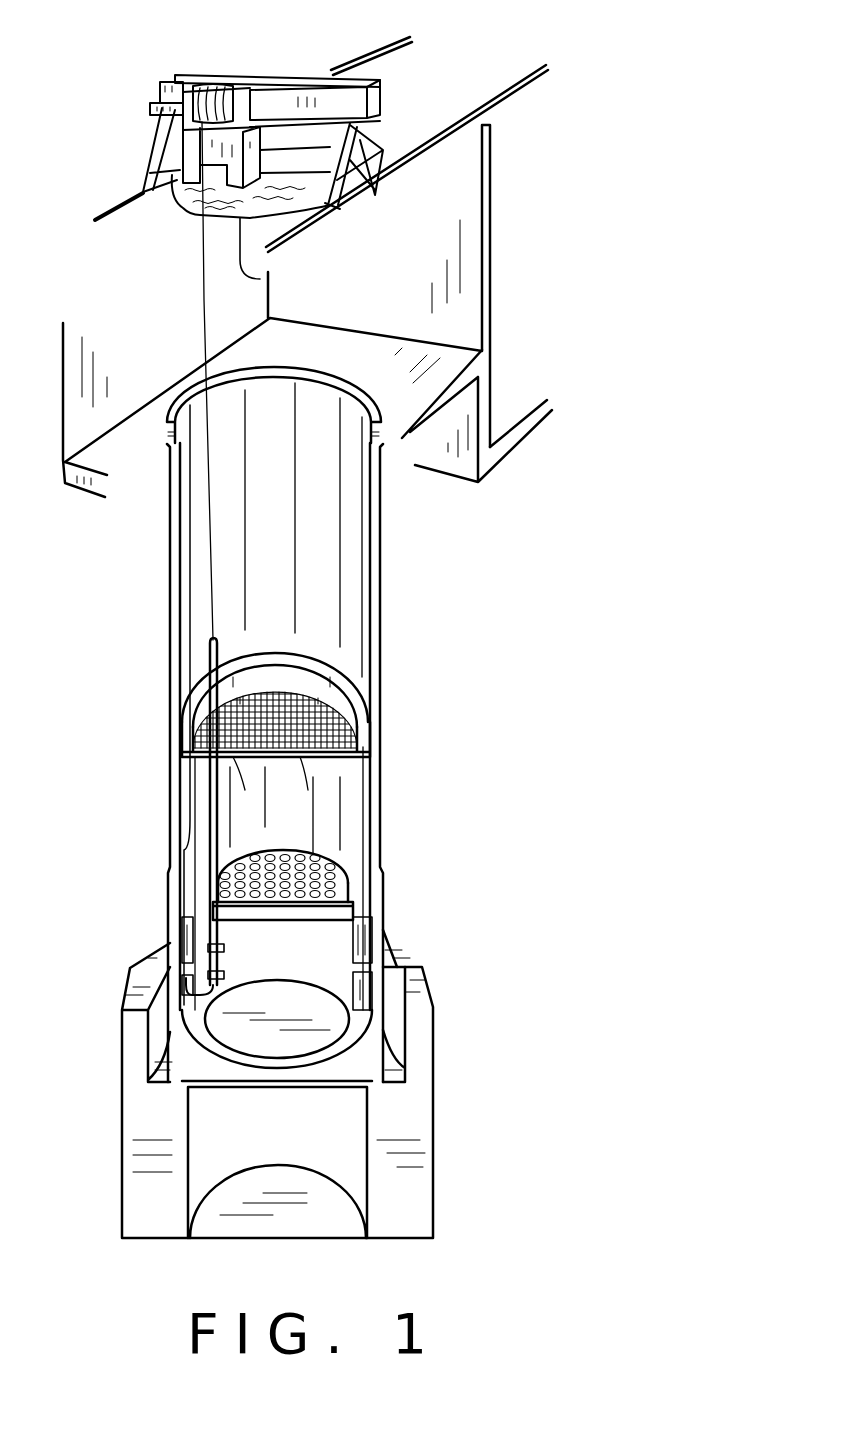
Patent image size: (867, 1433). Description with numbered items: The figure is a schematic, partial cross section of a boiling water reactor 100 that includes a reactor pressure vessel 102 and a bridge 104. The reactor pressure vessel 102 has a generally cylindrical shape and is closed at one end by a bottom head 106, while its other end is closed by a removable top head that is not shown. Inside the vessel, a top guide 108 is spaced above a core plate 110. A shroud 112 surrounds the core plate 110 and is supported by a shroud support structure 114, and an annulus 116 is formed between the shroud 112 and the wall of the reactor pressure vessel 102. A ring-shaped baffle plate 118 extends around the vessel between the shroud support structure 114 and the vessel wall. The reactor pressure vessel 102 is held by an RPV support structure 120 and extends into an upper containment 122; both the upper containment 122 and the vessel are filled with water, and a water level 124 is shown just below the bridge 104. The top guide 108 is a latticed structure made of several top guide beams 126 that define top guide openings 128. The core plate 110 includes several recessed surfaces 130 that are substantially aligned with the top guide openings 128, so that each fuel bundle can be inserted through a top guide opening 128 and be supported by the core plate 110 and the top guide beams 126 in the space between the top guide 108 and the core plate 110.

The boiling water reactor 100 is at (516, 322).
The reactor pressure vessel 102 is at (380, 547).
The bridge 104 is at (303, 54).
The bottom head 106 is at (380, 1067).
The top guide 108 is at (300, 730).
The core plate 110 is at (318, 865).
The shroud 112 is at (193, 783).
The shroud support structure 114 is at (190, 958).
The annulus 116 is at (183, 848).
The baffle plate 118 is at (367, 917).
The RPV support structure 120 is at (403, 1202).
The upper containment 122 is at (495, 398).
The water level 124 is at (260, 279).
The top guide beams 126 is at (240, 763).
The top guide openings 128 is at (350, 766).
The recessed surfaces 130 is at (282, 853).